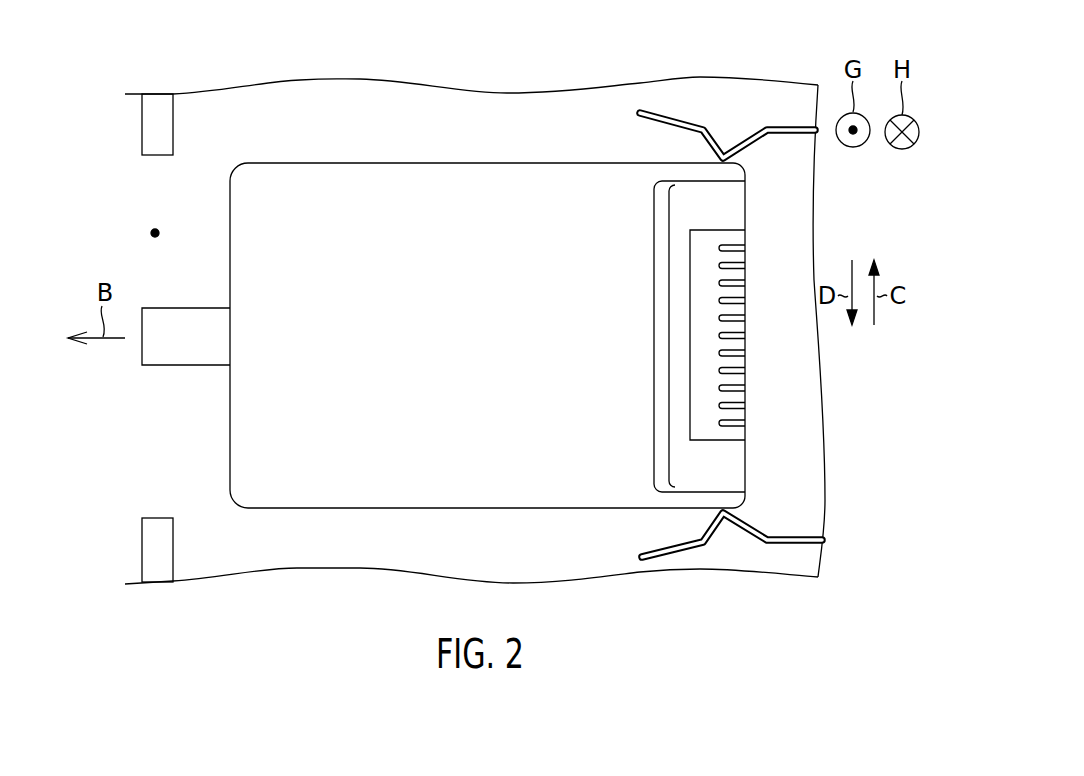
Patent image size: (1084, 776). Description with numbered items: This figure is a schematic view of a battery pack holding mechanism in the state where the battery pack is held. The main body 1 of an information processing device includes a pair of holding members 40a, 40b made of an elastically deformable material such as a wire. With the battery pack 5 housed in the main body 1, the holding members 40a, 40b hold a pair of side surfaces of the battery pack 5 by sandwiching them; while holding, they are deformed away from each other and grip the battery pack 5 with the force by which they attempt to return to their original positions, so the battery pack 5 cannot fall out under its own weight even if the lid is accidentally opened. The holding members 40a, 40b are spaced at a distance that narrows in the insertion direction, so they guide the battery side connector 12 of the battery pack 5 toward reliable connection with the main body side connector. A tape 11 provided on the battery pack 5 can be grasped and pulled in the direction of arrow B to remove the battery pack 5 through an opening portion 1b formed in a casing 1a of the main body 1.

The main body 1 is at (452, 115).
The casing 1a is at (141, 125).
The opening portion 1b is at (151, 233).
The battery pack 5 is at (245, 465).
The tape 11 is at (163, 352).
The battery side connector 12 is at (745, 397).
The holding member 40a is at (793, 128).
The holding member 40b is at (797, 542).